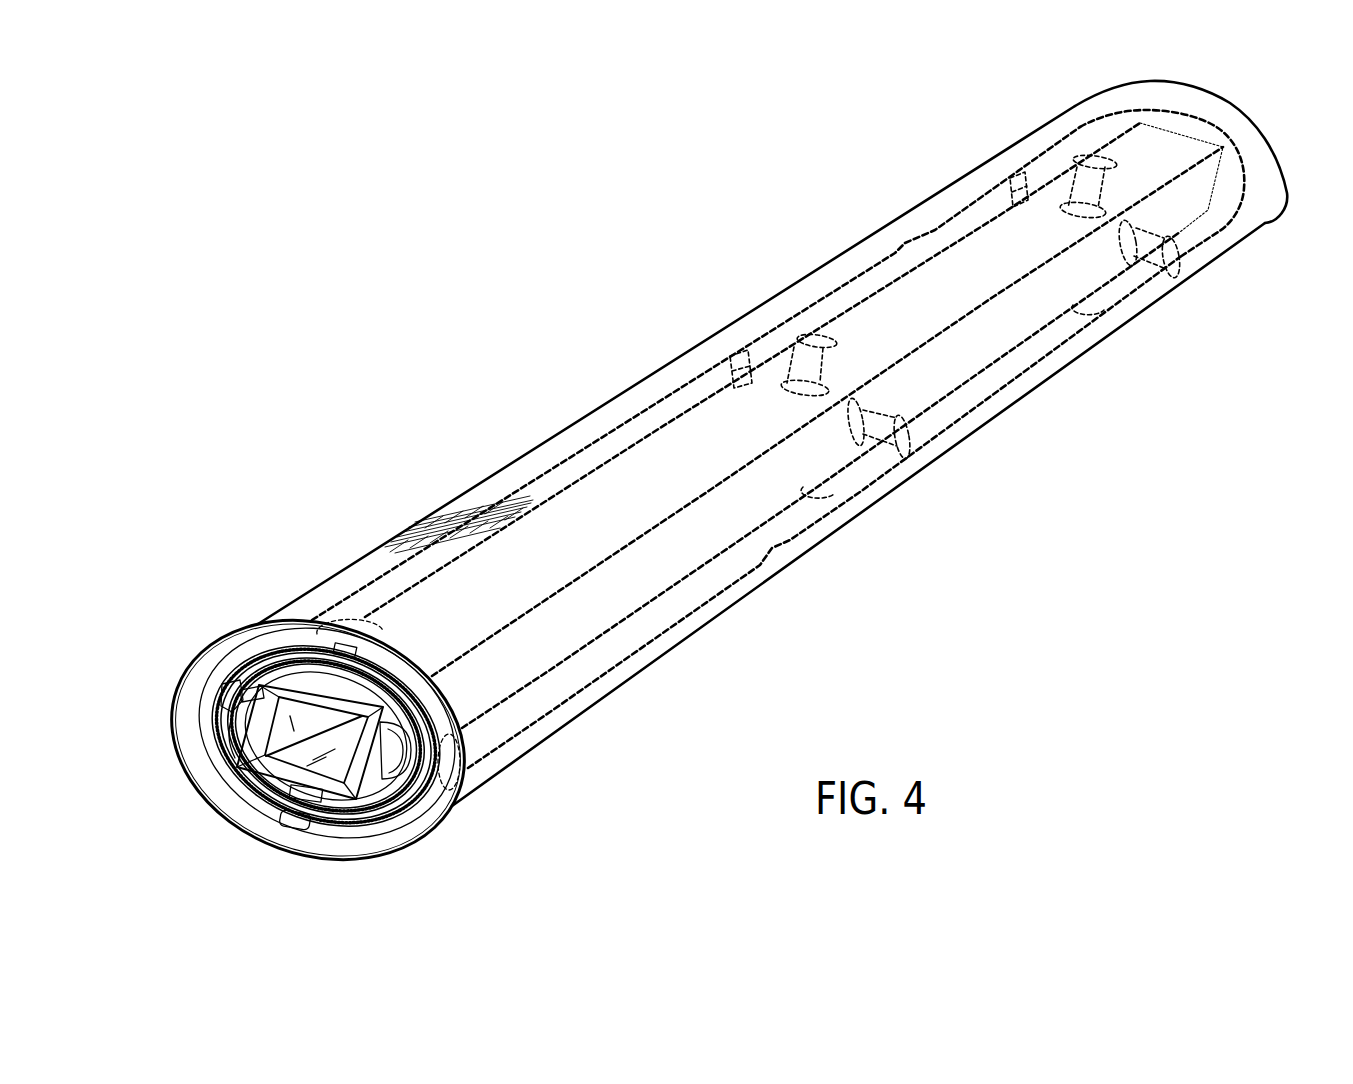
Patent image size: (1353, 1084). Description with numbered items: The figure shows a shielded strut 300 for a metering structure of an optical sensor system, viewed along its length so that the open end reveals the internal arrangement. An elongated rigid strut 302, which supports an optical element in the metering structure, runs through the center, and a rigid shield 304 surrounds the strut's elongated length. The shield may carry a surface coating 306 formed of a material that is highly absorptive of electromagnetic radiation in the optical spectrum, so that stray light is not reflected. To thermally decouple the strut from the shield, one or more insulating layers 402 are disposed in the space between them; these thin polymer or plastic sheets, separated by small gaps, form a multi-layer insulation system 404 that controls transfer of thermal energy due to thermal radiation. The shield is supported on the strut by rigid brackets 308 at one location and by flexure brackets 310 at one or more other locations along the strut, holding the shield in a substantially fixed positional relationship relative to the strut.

The shielded strut 300 is at (497, 362).
The rigid strut 302 is at (250, 748).
The rigid shield 304 is at (193, 690).
The surface coating 306 is at (418, 510).
The rigid brackets 308 is at (218, 696).
The flexure brackets 310 is at (747, 364).
The insulating layers 402 is at (397, 804).
The multi-layer insulation system 404 is at (801, 550).